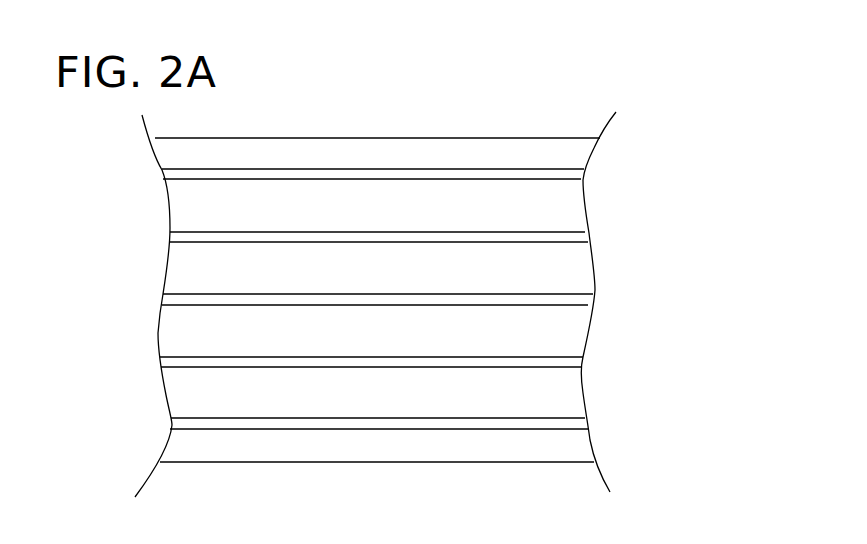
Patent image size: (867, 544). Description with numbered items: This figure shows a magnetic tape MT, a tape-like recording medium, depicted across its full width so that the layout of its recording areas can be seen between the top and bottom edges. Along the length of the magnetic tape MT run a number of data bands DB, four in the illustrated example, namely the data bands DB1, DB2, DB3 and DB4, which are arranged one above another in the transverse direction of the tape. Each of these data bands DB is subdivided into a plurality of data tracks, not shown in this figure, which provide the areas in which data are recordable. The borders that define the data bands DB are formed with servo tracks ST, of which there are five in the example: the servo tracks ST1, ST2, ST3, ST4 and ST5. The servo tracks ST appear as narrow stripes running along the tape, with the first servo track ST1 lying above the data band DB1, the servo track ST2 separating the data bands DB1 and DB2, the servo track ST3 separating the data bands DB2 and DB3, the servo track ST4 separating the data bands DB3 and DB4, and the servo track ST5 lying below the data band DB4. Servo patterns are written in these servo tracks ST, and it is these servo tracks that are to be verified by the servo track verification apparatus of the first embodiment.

The magnetic tape MT is at (207, 472).
The servo tracks ST is at (450, 286).
The first servo track ST1 is at (572, 175).
The second servo track ST2 is at (578, 235).
The third servo track ST3 is at (585, 298).
The fourth servo track ST4 is at (570, 361).
The fifth servo track ST5 is at (578, 425).
The data bands DB is at (471, 300).
The first data band DB1 is at (471, 206).
The second data band DB2 is at (471, 267).
The third data band DB3 is at (471, 331).
The fourth data band DB4 is at (471, 394).